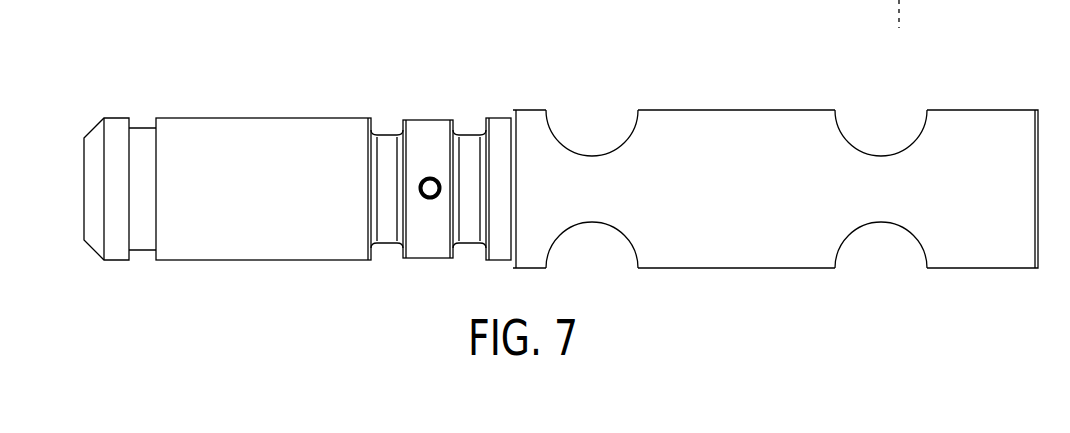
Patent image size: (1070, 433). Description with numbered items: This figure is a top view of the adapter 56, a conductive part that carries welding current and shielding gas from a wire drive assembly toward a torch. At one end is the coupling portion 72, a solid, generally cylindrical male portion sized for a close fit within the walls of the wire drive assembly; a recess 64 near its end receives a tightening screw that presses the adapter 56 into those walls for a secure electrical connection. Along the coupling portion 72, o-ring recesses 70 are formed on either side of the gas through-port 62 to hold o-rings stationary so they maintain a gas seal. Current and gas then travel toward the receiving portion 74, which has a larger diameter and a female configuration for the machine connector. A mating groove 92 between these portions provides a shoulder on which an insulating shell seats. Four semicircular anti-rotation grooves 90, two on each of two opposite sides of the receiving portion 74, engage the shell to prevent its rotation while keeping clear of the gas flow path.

The adapter 56 is at (364, 44).
The gas through-port 62 is at (430, 200).
The recess 64 is at (145, 240).
The o-ring recesses 70 is at (473, 142).
The coupling portion 72 is at (263, 245).
The receiving portion 74 is at (728, 122).
The anti-rotation grooves 90 is at (598, 101).
The mating groove 92 is at (513, 110).